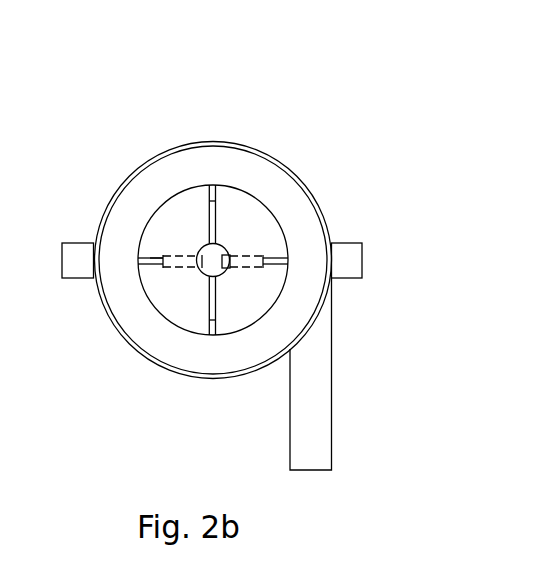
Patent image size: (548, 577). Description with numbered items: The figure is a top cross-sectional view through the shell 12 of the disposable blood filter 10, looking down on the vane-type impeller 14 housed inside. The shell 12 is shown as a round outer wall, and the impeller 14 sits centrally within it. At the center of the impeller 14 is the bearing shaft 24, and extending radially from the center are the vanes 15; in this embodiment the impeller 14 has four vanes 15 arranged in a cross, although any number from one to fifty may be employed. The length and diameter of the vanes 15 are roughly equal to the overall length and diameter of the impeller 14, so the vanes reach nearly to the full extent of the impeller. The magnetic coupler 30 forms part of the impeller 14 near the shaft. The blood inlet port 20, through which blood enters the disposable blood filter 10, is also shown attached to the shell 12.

The disposable blood filter 10 is at (180, 118).
The shell 12 is at (218, 141).
The impeller 14 is at (265, 244).
The vanes 15 is at (216, 211).
The blood inlet port 20 is at (332, 403).
The bearing shaft 24 is at (200, 247).
The magnetic coupler 30 is at (167, 277).